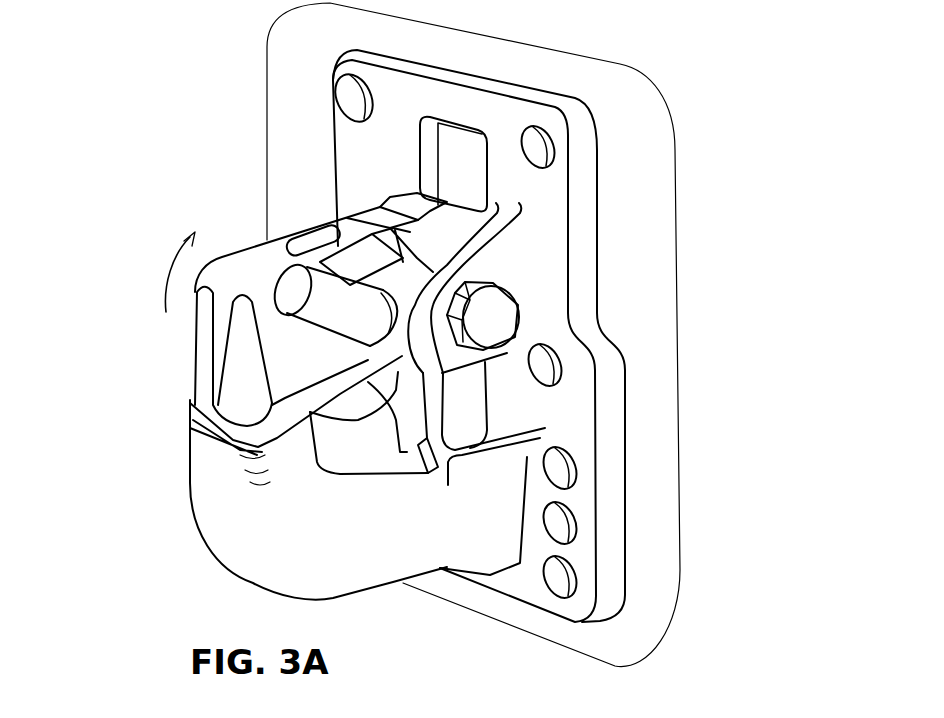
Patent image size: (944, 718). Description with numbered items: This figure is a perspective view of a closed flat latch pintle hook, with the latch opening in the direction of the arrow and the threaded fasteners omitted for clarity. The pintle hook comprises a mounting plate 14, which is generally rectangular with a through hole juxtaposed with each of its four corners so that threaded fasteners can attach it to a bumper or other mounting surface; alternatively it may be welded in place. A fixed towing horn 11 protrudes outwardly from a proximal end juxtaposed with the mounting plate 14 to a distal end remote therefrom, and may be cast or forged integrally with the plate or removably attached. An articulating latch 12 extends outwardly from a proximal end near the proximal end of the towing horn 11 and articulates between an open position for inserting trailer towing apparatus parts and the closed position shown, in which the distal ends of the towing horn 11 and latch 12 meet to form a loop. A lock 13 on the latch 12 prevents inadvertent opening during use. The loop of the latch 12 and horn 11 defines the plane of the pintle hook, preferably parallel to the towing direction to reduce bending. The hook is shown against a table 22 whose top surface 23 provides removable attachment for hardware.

The towing horn 11 is at (263, 547).
The articulating latch 12 is at (263, 260).
The lock 13 is at (337, 305).
The mounting plate 14 is at (573, 403).
The table 22 is at (643, 158).
The top surface 23 is at (656, 259).